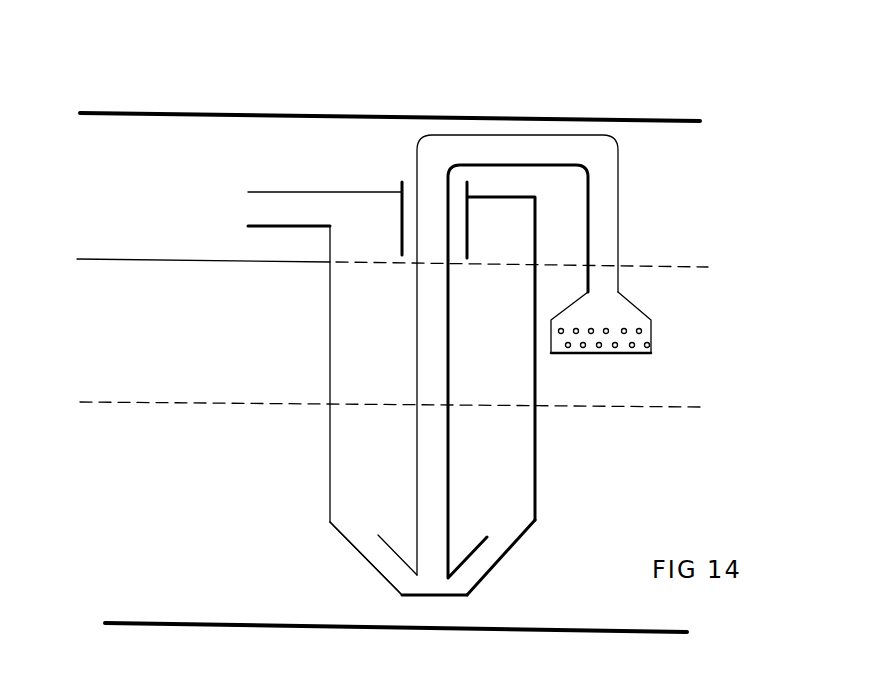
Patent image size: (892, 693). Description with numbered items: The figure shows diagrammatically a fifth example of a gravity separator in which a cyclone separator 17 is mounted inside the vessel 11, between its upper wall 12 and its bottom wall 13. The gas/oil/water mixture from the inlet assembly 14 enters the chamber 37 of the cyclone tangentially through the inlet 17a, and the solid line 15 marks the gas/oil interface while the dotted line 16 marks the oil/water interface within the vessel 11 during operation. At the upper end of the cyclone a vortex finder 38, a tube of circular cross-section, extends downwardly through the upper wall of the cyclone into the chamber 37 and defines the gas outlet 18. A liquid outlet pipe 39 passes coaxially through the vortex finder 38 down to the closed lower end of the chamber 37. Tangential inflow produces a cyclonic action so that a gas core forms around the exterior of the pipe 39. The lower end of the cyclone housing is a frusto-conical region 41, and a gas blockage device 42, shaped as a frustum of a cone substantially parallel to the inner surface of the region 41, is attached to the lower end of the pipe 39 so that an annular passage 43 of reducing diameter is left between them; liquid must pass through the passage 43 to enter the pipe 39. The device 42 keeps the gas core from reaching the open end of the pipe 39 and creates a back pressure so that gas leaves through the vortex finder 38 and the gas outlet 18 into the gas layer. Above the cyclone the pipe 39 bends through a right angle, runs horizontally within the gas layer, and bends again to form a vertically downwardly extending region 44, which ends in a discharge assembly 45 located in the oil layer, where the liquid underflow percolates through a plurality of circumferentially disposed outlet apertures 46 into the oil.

The vessel 11 is at (697, 162).
The upper wall 12 is at (608, 120).
The bottom wall 13 is at (611, 634).
The inlet assembly 14 is at (303, 315).
The gas/oil interface 15 is at (677, 266).
The oil/water interface 16 is at (660, 407).
The cyclone separator 17 is at (330, 352).
The inlet 17a is at (258, 208).
The gas outlet 18 is at (408, 183).
The chamber 37 is at (338, 437).
The vortex finder 38 is at (398, 248).
The liquid outlet pipe 39 is at (452, 447).
The frusto-conical region 41 is at (512, 548).
The gas blockage device 42 is at (383, 540).
The annular passage 43 is at (390, 565).
The vertically downwardly extending region 44 is at (605, 228).
The discharge assembly 45 is at (637, 298).
The outlet apertures 46 is at (614, 348).